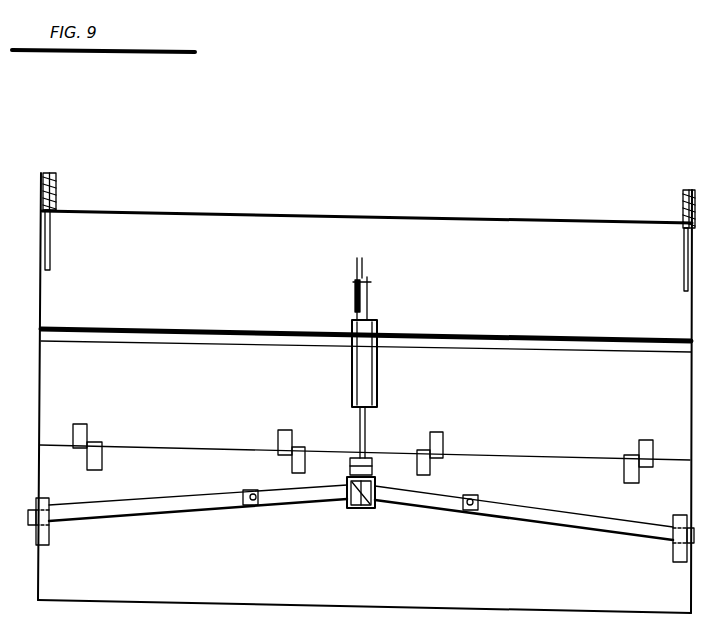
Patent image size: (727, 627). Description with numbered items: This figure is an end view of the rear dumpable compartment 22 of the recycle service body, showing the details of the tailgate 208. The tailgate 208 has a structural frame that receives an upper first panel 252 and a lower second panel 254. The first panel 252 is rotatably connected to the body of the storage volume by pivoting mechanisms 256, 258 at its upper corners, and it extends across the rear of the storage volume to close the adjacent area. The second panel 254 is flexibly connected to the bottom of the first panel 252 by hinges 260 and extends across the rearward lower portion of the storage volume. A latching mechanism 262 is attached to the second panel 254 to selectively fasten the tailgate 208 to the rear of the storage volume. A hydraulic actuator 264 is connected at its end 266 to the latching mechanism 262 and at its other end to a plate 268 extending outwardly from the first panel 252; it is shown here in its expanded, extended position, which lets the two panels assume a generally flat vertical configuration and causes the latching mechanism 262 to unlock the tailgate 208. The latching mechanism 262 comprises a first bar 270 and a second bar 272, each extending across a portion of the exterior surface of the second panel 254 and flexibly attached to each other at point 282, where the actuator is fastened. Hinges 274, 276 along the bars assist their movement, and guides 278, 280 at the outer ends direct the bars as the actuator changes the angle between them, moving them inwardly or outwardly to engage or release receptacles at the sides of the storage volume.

The rear dumpable compartment 22 is at (430, 152).
The tailgate 208 is at (218, 232).
The first panel 252 is at (532, 292).
The second panel 254 is at (358, 574).
The pivoting mechanism 256 is at (683, 195).
The pivoting mechanism 258 is at (58, 173).
The hinges 260 is at (85, 430).
The latching mechanism 262 is at (363, 509).
The hydraulic actuator 264 is at (368, 382).
The end 266 is at (362, 463).
The plate 268 is at (357, 277).
The first bar 270 is at (133, 512).
The second bar 272 is at (602, 523).
The hinge 274 is at (247, 492).
The hinge 276 is at (478, 497).
The guide 278 is at (45, 546).
The guide 280 is at (673, 553).
The point 282 is at (365, 501).